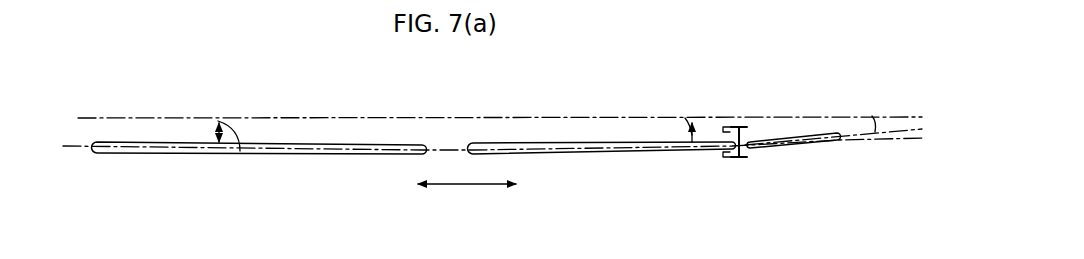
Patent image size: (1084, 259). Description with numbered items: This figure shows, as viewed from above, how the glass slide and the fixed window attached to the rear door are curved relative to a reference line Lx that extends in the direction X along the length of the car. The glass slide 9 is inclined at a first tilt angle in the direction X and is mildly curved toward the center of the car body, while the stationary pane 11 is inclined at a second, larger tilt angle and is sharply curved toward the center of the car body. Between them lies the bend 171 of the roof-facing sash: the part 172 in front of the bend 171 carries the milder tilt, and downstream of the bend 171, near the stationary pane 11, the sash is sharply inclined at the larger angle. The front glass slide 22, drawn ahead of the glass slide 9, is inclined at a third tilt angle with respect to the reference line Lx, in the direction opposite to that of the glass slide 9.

The front glass slide 22 is at (327, 156).
The glass slide 9 is at (563, 156).
The stationary pane 11 is at (806, 149).
The bend 171 is at (750, 174).
The part of the roof-facing sash 172 is at (603, 170).
The direction along the length of the car X is at (482, 186).
The reference line Lx is at (593, 113).